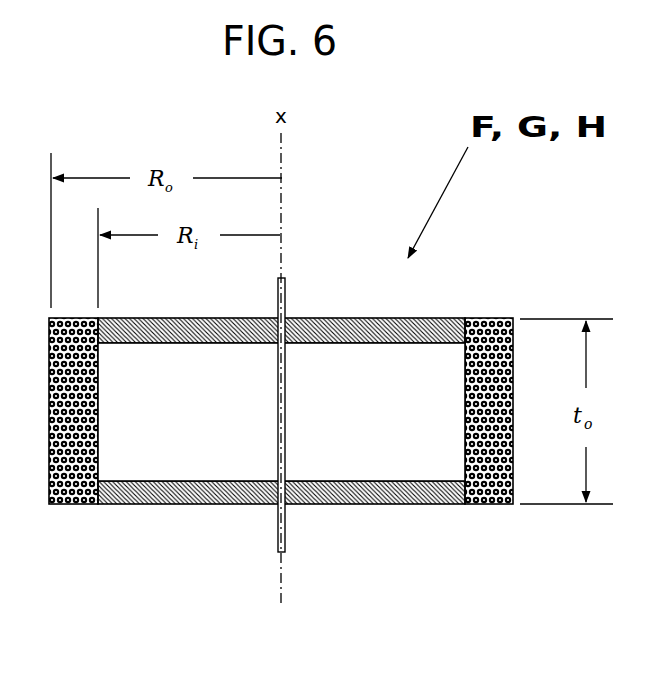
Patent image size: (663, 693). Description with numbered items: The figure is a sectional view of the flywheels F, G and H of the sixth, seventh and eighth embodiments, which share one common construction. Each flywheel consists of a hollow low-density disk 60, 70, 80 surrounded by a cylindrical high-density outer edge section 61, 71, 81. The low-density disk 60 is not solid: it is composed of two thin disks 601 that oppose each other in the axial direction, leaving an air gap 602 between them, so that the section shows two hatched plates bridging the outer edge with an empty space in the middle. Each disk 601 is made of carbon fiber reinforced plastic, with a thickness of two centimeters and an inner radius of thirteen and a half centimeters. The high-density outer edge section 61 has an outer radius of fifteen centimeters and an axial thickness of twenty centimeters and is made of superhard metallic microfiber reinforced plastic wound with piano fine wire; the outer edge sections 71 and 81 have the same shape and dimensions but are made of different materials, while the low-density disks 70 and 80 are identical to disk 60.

The low-density disk 60 is at (344, 435).
The low-density disk 70 is at (344, 435).
The low-density disk 80 is at (344, 435).
The high-density outer edge section 61 is at (344, 365).
The high-density outer edge section 71 is at (344, 365).
The high-density outer edge section 81 is at (488, 318).
The disk 601 is at (353, 318).
The air gap 602 is at (188, 452).